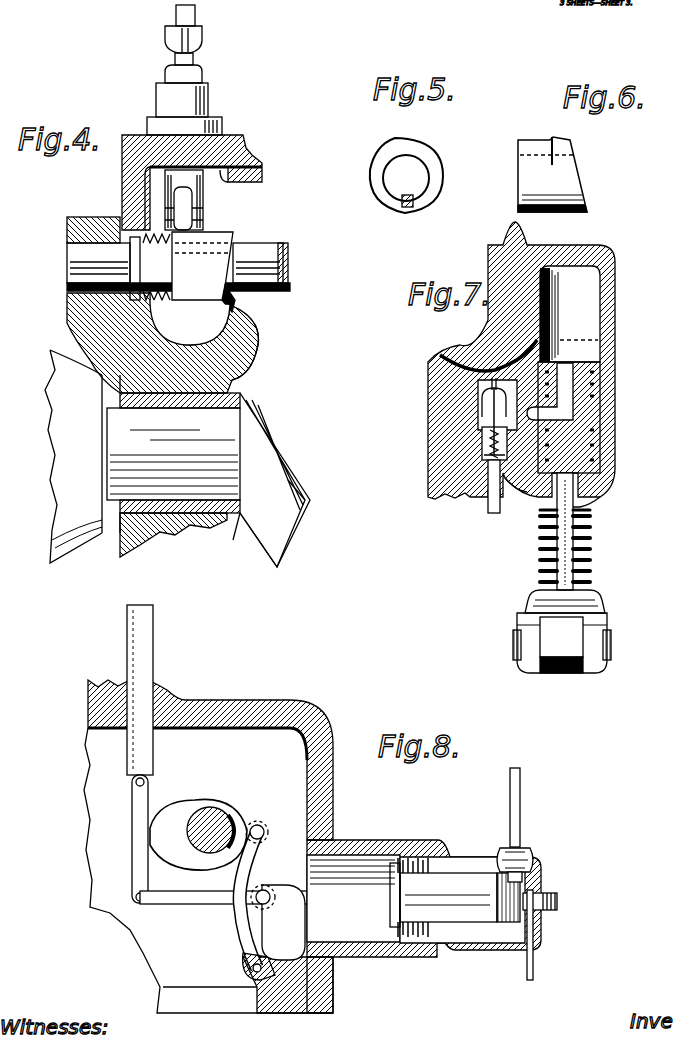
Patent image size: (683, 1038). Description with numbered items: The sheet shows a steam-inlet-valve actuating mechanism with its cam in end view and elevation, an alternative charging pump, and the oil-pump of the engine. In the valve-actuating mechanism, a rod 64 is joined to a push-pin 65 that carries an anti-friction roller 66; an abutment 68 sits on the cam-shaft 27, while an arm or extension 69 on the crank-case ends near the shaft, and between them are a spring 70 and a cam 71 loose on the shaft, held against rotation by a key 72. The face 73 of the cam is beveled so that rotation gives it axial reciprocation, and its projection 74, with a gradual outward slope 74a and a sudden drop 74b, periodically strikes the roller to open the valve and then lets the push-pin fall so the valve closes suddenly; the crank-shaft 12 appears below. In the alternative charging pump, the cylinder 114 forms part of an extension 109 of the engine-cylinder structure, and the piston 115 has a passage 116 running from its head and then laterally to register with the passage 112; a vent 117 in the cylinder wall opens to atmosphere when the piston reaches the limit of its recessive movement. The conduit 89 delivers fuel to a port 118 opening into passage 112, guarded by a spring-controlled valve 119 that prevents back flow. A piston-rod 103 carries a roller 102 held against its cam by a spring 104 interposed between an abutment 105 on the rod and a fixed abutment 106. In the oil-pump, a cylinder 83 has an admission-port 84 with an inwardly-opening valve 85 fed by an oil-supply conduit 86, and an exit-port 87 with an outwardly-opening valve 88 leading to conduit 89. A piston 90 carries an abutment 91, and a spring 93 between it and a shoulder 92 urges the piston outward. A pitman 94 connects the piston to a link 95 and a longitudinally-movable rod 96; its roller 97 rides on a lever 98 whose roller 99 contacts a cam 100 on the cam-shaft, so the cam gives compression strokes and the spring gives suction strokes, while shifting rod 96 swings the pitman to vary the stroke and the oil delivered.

In FIG. 4, the rod 64 is at (196, 15).
In FIG. 4, the push-pin 65 is at (208, 95).
In FIG. 4, the anti-friction roller 66 is at (193, 200).
In FIG. 4, the abutment 68 is at (130, 257).
In FIG. 4, the cam-shaft 27 is at (288, 270).
In FIG. 8, the cam-shaft 27 is at (213, 817).
In FIG. 4, the key 72 is at (217, 245).
In FIG. 5, the key 72 is at (407, 207).
In FIG. 6, the key 72 is at (587, 212).
In FIG. 4, the cam 71 is at (232, 248).
In FIG. 5, the cam 71 is at (437, 177).
In FIG. 4, the face 73 is at (240, 262).
In FIG. 6, the face 73 is at (580, 178).
In FIG. 4, the projection 74 is at (205, 302).
In FIG. 6, the projection 74 is at (552, 137).
In FIG. 4, the gradual outward slope 74a is at (202, 266).
In FIG. 6, the gradual outward slope 74a is at (538, 140).
In FIG. 4, the sudden drop 74b is at (240, 305).
In FIG. 6, the sudden drop 74b is at (553, 140).
In FIG. 4, the spring 70 is at (212, 300).
In FIG. 4, the arm or extension 69 is at (262, 332).
In FIG. 4, the crank-shaft 12 is at (206, 471).
In FIG. 7, the extension 109 is at (520, 270).
In FIG. 7, the passage 116 is at (565, 393).
In FIG. 7, the cylinder 114 is at (605, 378).
In FIG. 7, the piston 115 is at (590, 420).
In FIG. 7, the passage 112 is at (452, 357).
In FIG. 7, the spring-controlled valve 119 is at (470, 335).
In FIG. 7, the port 118 is at (480, 402).
In FIG. 7, the conduit 89 is at (490, 493).
In FIG. 8, the conduit 89 is at (520, 803).
In FIG. 7, the vent 117 is at (527, 492).
In FIG. 7, the fixed abutment 106 is at (597, 504).
In FIG. 7, the piston-rod 103 is at (567, 550).
In FIG. 7, the spring 104 is at (592, 573).
In FIG. 7, the abutment 105 is at (598, 592).
In FIG. 7, the anti-friction roller 102 is at (559, 666).
In FIG. 8, the longitudinally-movable rod 96 is at (153, 660).
In FIG. 8, the link 95 is at (135, 818).
In FIG. 8, the cam 100 is at (177, 852).
In FIG. 8, the pitman 94 is at (348, 902).
In FIG. 8, the arm or lever 98 is at (236, 923).
In FIG. 8, the anti-friction roller or abutment 97 is at (265, 889).
In FIG. 8, the anti-friction roller 99 is at (258, 824).
In FIG. 8, the cylinder 83 is at (467, 945).
In FIG. 8, the piston 90 is at (455, 895).
In FIG. 8, the abutment 91 is at (398, 858).
In FIG. 8, the spring 93 is at (415, 940).
In FIG. 8, the shoulder 92 is at (440, 950).
In FIG. 8, the exit-port 87 is at (543, 850).
In FIG. 8, the outwardly-opening spring-controlled valve 88 is at (540, 870).
In FIG. 8, the admission-port 84 is at (540, 890).
In FIG. 8, the oil-supply conduit 86 is at (533, 960).
In FIG. 8, the inwardly-opening spring-controlled valve 85 is at (520, 903).